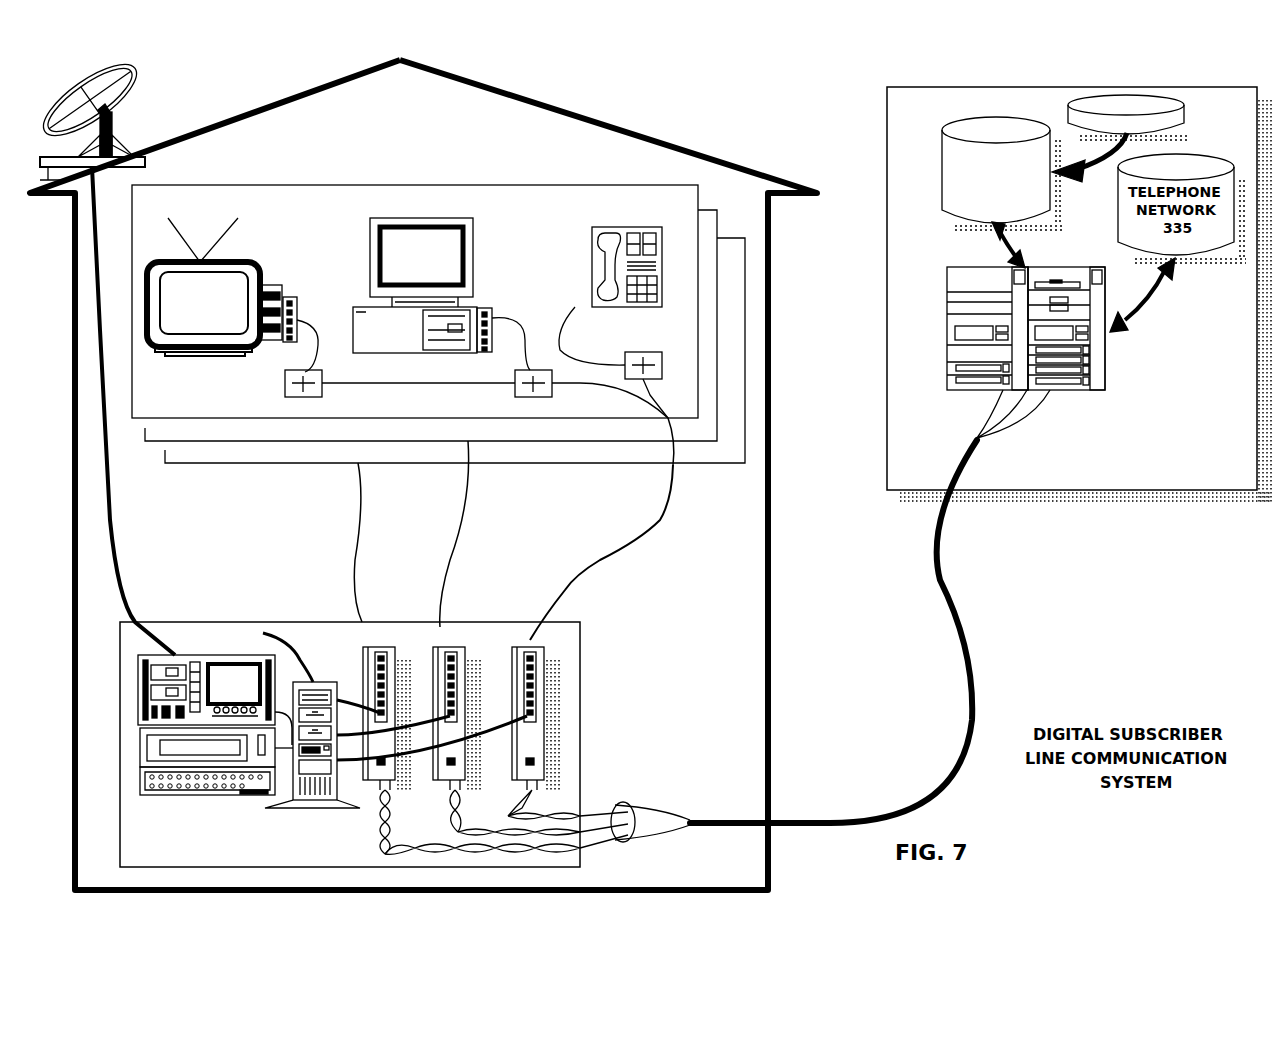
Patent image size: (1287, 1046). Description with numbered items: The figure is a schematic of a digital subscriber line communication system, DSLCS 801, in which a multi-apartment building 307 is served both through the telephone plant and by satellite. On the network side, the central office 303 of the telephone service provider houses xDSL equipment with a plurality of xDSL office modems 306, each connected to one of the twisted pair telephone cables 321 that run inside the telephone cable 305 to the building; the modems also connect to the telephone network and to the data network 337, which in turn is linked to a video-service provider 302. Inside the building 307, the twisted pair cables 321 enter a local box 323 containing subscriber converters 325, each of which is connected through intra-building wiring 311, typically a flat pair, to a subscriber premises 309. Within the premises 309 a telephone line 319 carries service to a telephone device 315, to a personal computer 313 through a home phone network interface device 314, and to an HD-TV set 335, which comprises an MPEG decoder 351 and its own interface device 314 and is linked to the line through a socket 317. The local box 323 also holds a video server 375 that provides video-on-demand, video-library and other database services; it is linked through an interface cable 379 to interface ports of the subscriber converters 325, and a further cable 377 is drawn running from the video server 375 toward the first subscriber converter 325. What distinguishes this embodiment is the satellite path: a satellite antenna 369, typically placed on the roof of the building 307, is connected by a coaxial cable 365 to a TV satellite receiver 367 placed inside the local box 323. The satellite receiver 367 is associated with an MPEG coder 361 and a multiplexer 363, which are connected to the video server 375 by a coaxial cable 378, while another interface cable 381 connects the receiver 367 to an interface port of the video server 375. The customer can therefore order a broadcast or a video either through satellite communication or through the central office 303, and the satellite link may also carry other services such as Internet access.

The DSLCS 801 is at (1109, 807).
The building 307 is at (628, 152).
The satellite antenna 369 is at (143, 82).
The coaxial cable 365 is at (118, 527).
The subscriber premises 309 is at (192, 197).
The HD-TV set 335 is at (262, 262).
The MPEG decoder 351 is at (272, 285).
The HPNA-2 interface device 314 is at (296, 300).
The personal computer 313 is at (468, 262).
The telephone device 315 is at (623, 227).
The socket 317 is at (285, 383).
The telephone line 319 is at (377, 383).
The intra-building wiring 311 is at (362, 508).
The local box 323 is at (565, 705).
The TV satellite receiver 367 is at (230, 657).
The MPEG coder 361 is at (148, 747).
The multiplexer 363 is at (165, 795).
The interface cable 381 is at (283, 747).
The video server 375 is at (268, 808).
The coaxial cable 378 is at (270, 655).
The cable 377 is at (377, 663).
The interface cable 379 is at (423, 760).
The subscriber converter 325 is at (393, 628).
The twisted pair telephone cables 321 is at (595, 812).
The cable 305 is at (960, 583).
The central office 303 is at (885, 145).
The video-service provider 302 is at (1215, 108).
The data network 337 is at (1002, 192).
The xDSL office modems 306 is at (1085, 350).